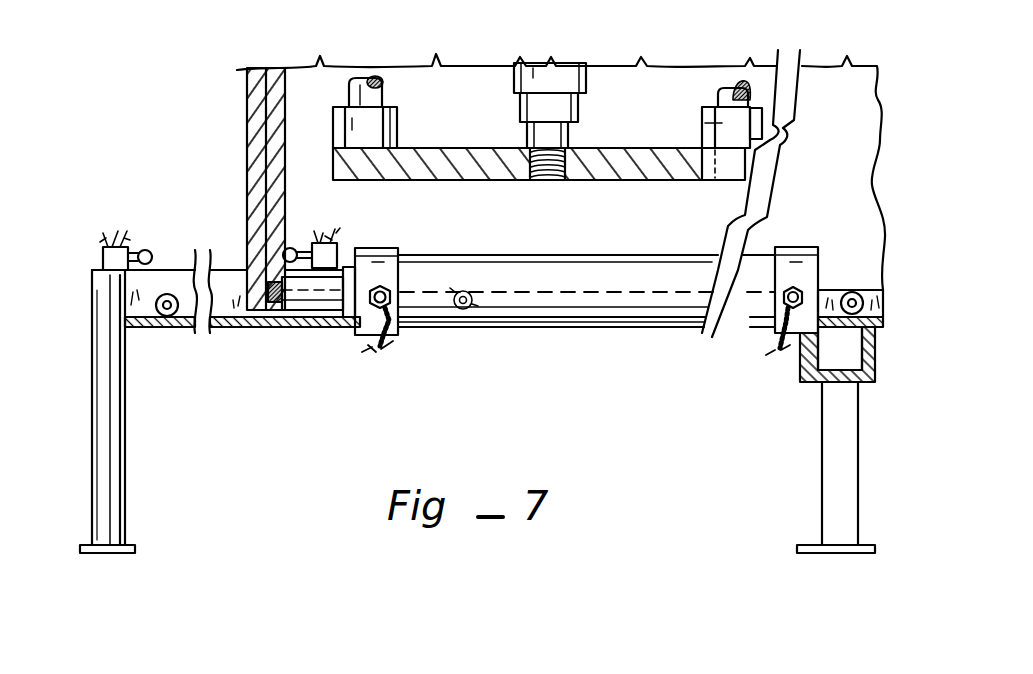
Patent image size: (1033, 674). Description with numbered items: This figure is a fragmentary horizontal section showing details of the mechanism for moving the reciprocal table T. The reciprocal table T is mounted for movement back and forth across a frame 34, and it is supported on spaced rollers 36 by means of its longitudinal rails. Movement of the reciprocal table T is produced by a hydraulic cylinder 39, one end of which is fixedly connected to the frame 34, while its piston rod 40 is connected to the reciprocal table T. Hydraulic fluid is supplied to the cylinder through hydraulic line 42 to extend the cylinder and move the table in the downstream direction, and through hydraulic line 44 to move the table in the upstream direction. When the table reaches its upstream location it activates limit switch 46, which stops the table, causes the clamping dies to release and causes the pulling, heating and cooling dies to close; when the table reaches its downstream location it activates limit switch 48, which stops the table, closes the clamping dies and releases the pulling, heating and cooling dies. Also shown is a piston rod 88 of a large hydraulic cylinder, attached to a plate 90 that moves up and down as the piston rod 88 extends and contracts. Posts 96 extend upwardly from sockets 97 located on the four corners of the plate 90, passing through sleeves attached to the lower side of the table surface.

The reciprocal table T is at (238, 127).
The frame 34 is at (150, 328).
The rollers 36 is at (168, 293).
The hydraulic cylinder 39 is at (598, 295).
The piston rod 40 is at (305, 295).
The hydraulic line 42 is at (779, 344).
The hydraulic line 44 is at (383, 346).
The limit switch 46 is at (330, 247).
The limit switch 48 is at (108, 247).
The piston rod 88 is at (577, 100).
The plate 90 is at (655, 182).
The posts 96 is at (372, 95).
The sockets 97 is at (397, 118).